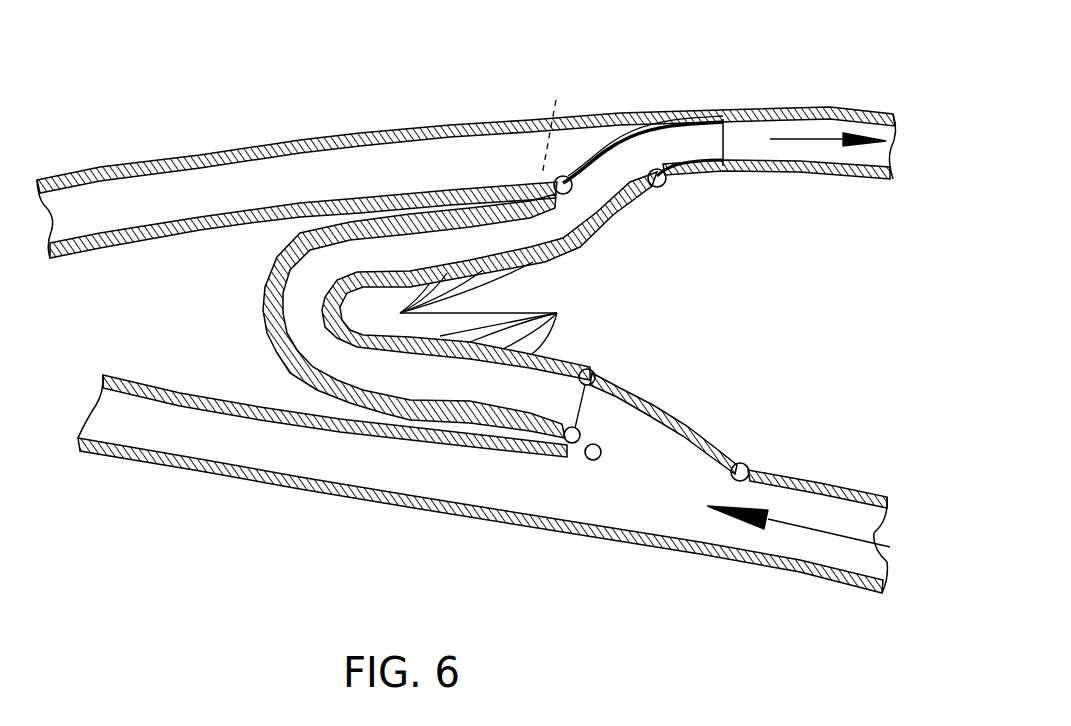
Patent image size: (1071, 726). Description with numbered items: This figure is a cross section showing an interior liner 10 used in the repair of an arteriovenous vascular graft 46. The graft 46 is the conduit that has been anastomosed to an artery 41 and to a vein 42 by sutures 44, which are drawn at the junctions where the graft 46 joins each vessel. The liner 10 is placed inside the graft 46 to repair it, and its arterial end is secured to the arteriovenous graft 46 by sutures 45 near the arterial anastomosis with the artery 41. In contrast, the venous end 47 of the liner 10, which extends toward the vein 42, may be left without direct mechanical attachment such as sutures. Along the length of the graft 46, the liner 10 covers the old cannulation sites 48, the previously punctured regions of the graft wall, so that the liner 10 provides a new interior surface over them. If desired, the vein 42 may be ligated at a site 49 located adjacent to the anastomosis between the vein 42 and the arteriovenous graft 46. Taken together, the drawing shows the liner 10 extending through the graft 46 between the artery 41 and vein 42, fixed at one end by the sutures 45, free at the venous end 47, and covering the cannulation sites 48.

The interior liner 10 is at (745, 143).
The artery 41 is at (183, 463).
The vein 42 is at (213, 143).
The sutures 44 is at (550, 181).
The sutures 45 is at (600, 440).
The arteriovenous vascular graft 46 is at (617, 230).
The venous end 47 is at (723, 133).
The old cannulation sites 48 is at (572, 311).
The site 49 is at (556, 100).